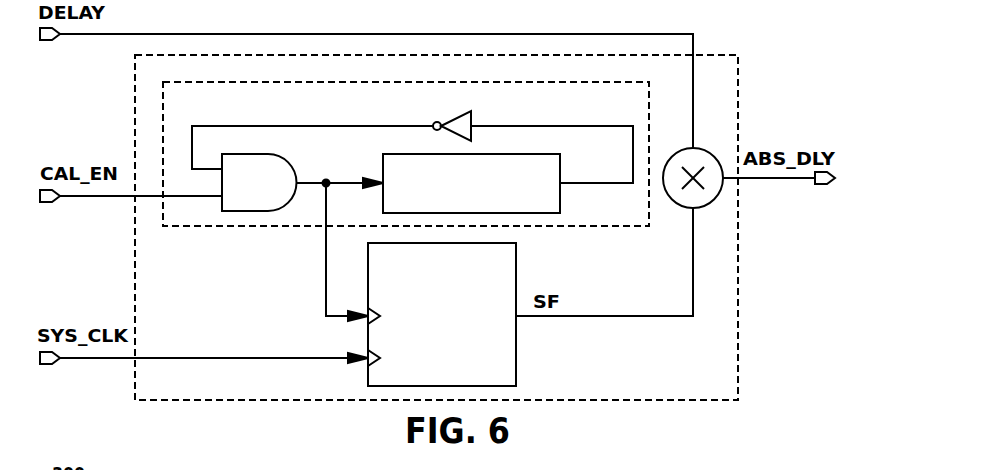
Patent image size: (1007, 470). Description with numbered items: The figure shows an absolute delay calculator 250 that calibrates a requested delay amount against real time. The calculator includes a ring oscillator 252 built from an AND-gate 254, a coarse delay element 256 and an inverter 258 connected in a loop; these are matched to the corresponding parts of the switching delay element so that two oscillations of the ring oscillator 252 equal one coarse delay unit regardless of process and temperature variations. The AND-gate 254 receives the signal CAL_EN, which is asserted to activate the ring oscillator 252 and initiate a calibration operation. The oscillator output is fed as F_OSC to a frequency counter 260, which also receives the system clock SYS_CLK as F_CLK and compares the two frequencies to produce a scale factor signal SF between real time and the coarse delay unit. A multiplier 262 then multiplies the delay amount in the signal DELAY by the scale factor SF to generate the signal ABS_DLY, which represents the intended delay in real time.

The absolute delay calculator 250 is at (135, 115).
The ring oscillator 252 is at (238, 227).
The AND-gate 254 is at (290, 166).
The coarse delay element 256 is at (560, 165).
The inverter 258 is at (452, 115).
The frequency counter 260 is at (516, 268).
The multiplier 262 is at (708, 204).